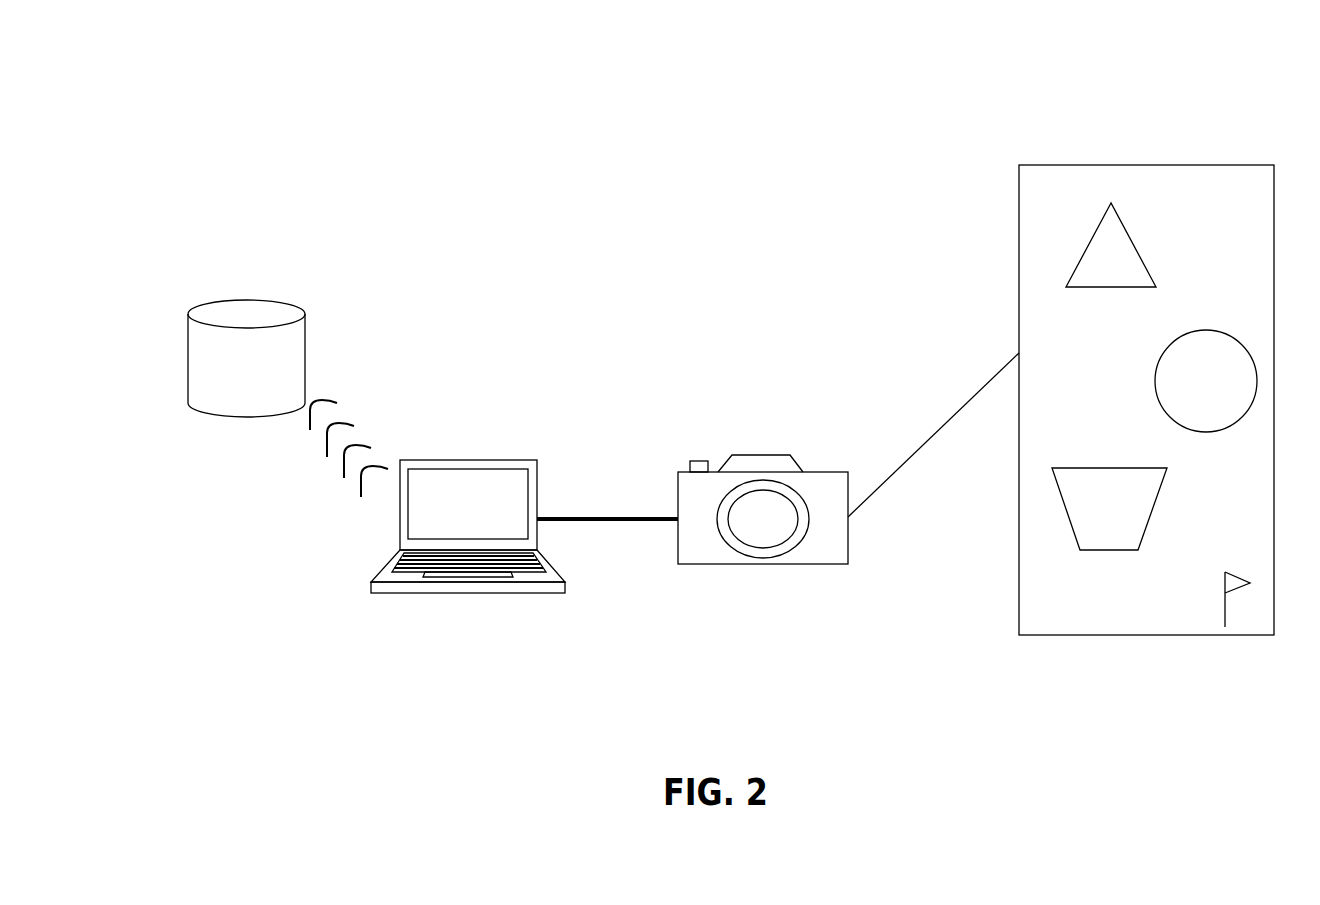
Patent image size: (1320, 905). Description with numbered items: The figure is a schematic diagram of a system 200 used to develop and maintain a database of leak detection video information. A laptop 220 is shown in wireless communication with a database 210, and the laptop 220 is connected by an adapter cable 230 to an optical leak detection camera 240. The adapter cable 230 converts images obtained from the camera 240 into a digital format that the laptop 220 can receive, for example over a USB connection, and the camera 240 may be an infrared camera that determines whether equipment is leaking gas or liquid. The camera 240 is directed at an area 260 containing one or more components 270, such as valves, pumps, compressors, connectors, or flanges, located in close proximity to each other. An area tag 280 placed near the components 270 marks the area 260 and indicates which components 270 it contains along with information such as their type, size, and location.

The system 200 is at (718, 73).
The database 210 is at (236, 299).
The laptop 220 is at (462, 594).
The adapter cable 230 is at (575, 521).
The optical leak detection camera 240 is at (772, 565).
The area 260 is at (1108, 165).
The components 270 is at (1109, 287).
The area tag 280 is at (1237, 598).